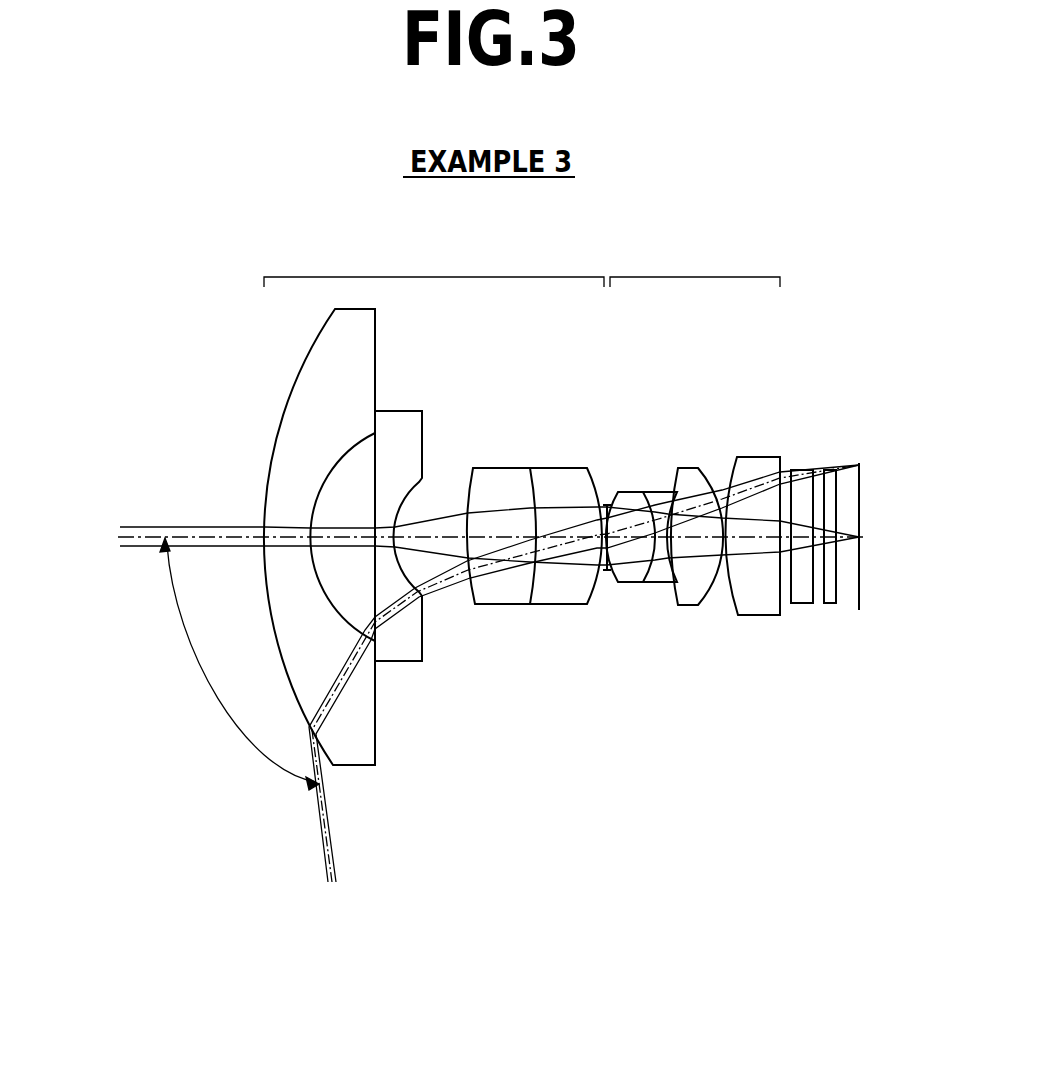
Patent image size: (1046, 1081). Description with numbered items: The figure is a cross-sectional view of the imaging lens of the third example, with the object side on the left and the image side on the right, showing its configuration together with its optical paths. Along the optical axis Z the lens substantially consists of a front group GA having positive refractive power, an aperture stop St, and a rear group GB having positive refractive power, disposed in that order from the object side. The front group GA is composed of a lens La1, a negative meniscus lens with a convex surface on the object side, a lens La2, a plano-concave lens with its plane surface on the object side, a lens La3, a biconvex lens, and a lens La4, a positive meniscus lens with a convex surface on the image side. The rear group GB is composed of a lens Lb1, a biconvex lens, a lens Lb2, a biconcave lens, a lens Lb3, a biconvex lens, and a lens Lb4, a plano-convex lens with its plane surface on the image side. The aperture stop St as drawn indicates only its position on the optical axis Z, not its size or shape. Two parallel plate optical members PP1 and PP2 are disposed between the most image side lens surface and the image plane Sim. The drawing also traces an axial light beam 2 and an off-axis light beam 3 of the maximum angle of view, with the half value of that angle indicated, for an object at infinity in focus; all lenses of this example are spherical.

The axial light beam 2 is at (115, 517).
The off-axis light beam 3 is at (350, 882).
The optical axis Z is at (140, 522).
The front group GA is at (434, 263).
The rear group GB is at (695, 263).
The lens La1 is at (353, 755).
The lens La2 is at (400, 655).
The lens La3 is at (490, 607).
The lens La4 is at (560, 605).
The aperture stop St is at (606, 572).
The lens Lb1 is at (632, 585).
The lens Lb2 is at (665, 585).
The lens Lb3 is at (688, 606).
The lens Lb4 is at (760, 617).
The parallel plate optical member PP1 is at (805, 604).
The parallel plate optical member PP2 is at (830, 605).
The image plane Sim is at (862, 597).